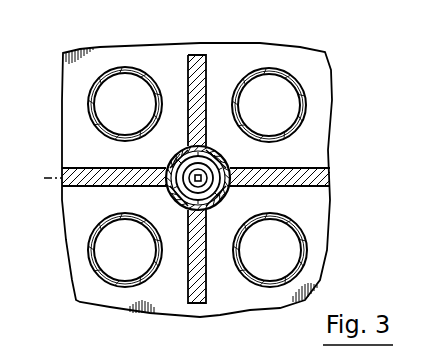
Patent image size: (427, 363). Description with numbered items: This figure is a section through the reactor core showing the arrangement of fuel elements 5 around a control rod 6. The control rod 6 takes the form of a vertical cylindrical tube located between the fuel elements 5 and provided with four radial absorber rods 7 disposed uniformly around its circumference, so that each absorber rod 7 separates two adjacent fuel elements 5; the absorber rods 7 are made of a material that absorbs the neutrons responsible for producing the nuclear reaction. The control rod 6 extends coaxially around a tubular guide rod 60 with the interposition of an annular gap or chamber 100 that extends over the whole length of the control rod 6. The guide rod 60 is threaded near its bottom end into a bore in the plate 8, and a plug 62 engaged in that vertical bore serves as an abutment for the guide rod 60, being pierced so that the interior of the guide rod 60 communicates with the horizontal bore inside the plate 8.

The fuel elements 5 is at (138, 68).
The control rod 6 is at (182, 148).
The absorber rods 7 is at (195, 62).
The guide rod 60 is at (205, 146).
The plate 8 is at (325, 98).
The annular gap or chamber 100 is at (232, 166).
The plug 62 is at (230, 192).